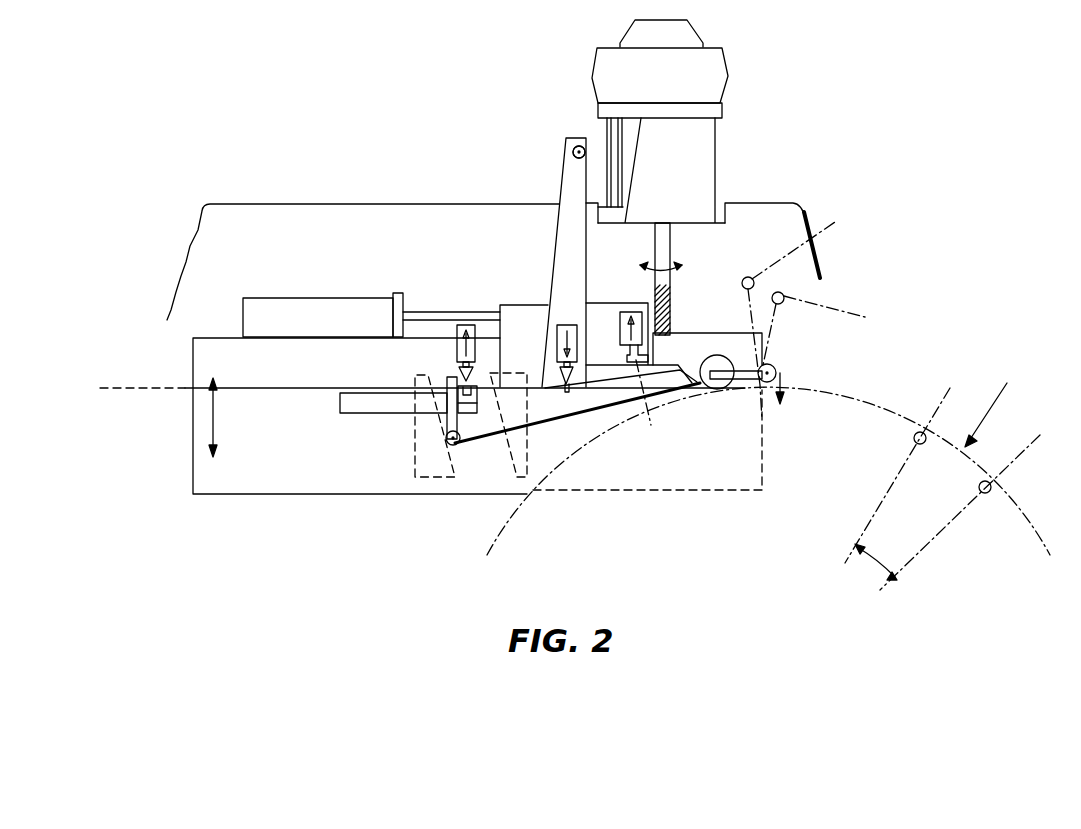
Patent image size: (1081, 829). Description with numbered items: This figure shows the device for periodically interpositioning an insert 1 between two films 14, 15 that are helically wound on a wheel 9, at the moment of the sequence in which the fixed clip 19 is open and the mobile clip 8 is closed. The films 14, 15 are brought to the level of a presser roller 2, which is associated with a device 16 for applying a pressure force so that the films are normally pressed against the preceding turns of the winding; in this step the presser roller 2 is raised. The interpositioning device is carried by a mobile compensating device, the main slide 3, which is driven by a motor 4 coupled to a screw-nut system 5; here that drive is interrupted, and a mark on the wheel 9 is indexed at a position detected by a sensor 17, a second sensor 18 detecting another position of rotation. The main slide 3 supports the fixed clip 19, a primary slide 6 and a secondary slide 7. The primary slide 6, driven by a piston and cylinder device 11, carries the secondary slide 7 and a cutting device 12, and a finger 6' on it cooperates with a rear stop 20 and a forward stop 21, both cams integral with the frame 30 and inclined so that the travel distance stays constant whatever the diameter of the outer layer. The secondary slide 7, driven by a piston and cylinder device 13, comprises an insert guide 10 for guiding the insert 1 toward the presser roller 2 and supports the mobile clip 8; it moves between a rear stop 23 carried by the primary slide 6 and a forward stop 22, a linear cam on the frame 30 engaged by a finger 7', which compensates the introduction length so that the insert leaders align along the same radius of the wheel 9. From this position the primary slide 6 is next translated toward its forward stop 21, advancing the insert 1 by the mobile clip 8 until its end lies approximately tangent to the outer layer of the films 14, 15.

The insert 1 is at (233, 390).
The presser roller 2 is at (761, 381).
The main slide 3 is at (281, 456).
The motor 4 is at (605, 62).
The screw-nut system 5 is at (663, 251).
The primary slide 6 is at (586, 328).
The finger 6' is at (420, 433).
The secondary slide 7 is at (560, 297).
The finger 7' is at (569, 133).
The mobile clip 8 is at (574, 390).
The wheel 9 is at (842, 398).
The insert guide 10 is at (612, 375).
The piston and cylinder device 11 is at (287, 302).
The cutting device 12 is at (637, 315).
The piston and cylinder device 13 is at (358, 404).
The film 14 is at (851, 312).
The film 15 is at (780, 253).
The pressure force device 16 is at (720, 358).
The sensor 17 is at (993, 492).
The sensor 18 is at (915, 432).
The fixed clip 19 is at (458, 372).
The rear stop 20 is at (413, 455).
The forward stop 21 is at (510, 455).
The forward stop 22 is at (707, 145).
The rear stop 23 is at (640, 375).
The frame 30 is at (404, 208).
The radius R is at (986, 415).